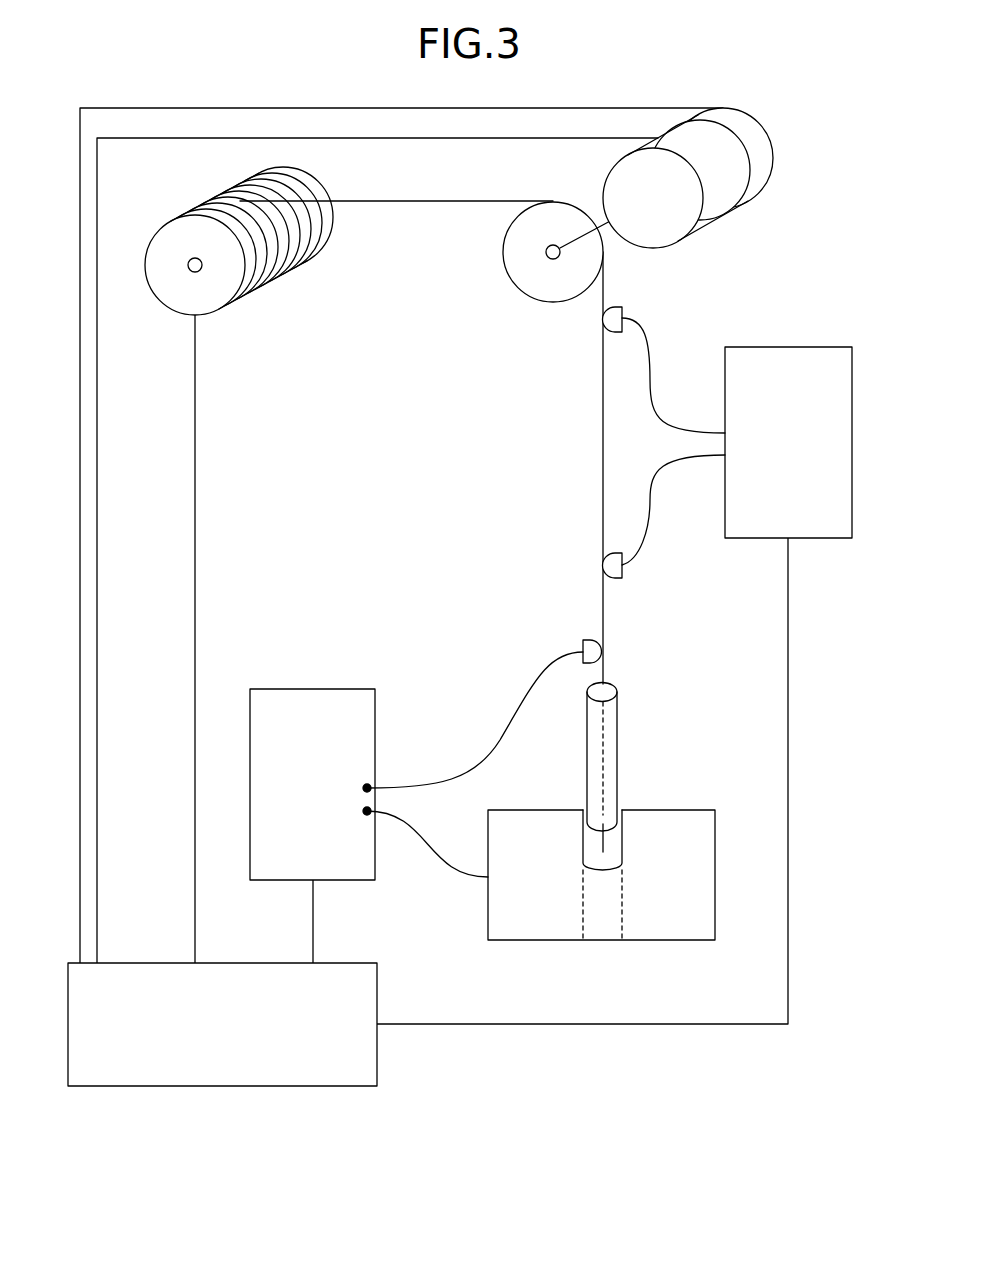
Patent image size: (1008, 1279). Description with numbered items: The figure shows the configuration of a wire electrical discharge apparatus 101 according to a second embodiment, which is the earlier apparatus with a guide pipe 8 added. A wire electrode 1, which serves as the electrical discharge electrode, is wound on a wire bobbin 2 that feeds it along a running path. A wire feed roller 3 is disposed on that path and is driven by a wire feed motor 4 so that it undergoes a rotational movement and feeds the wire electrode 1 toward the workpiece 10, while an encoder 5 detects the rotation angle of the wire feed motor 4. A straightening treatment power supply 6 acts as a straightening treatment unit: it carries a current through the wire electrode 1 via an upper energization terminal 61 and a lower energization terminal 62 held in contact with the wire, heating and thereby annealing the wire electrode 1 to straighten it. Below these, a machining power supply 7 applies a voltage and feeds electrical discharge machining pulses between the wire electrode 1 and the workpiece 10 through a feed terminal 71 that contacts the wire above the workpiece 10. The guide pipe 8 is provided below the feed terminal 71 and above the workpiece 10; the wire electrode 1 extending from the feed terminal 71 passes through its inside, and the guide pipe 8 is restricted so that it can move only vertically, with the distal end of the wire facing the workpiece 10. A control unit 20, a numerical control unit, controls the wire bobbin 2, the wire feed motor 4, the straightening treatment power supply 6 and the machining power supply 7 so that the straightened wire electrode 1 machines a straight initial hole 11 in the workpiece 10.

The wire electrode 1 is at (400, 201).
The wire bobbin 2 is at (168, 228).
The wire feed roller 3 is at (550, 302).
The wire feed motor 4 is at (713, 226).
The encoder 5 is at (750, 199).
The straightening treatment power supply 6 is at (788, 347).
The upper energization terminal 61 is at (624, 310).
The lower energization terminal 62 is at (622, 578).
The machining power supply 7 is at (313, 689).
The feed terminal 71 is at (582, 641).
The guide pipe 8 is at (617, 742).
The workpiece 10 is at (673, 794).
The initial hole 11 is at (600, 920).
The control unit 20 is at (312, 1086).
The wire electrical discharge apparatus 101 is at (777, 1145).